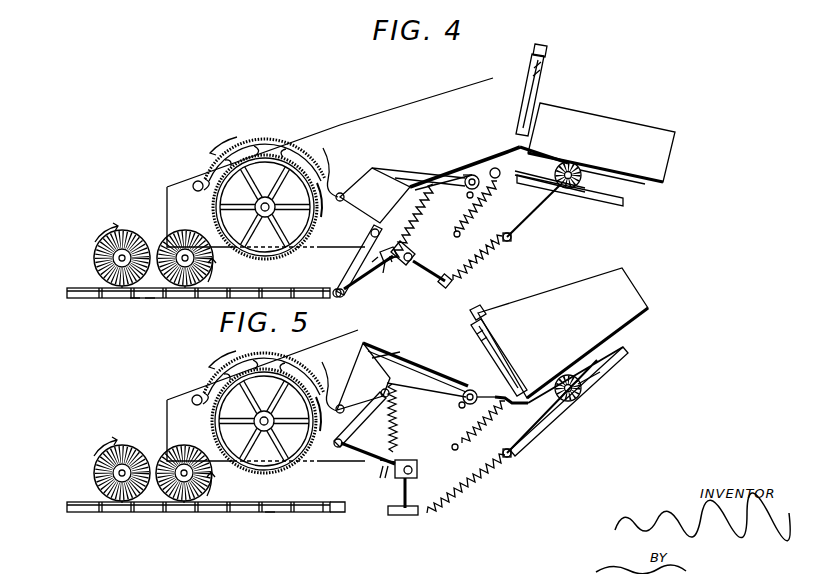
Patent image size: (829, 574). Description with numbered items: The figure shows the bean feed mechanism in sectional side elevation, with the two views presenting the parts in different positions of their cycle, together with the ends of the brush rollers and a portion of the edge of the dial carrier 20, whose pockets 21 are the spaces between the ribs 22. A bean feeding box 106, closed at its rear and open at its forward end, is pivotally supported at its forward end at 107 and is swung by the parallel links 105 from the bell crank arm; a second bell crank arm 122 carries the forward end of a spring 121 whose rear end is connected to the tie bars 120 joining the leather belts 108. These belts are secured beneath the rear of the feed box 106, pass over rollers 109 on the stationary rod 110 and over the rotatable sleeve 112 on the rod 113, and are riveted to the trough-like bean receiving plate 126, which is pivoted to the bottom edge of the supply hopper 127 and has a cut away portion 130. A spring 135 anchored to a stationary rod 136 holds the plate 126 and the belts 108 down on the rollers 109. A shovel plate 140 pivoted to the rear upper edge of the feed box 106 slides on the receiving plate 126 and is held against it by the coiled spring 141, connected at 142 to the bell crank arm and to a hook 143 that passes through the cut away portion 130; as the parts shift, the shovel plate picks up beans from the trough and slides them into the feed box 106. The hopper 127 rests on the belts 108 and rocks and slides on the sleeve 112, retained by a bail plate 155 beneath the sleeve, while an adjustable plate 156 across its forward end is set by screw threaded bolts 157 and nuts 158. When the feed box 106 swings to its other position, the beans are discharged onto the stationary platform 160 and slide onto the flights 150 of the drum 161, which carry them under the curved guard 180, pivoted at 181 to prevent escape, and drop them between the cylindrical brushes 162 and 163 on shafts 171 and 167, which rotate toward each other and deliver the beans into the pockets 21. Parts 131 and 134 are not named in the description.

In FIG. 4, the dial carrier 20 is at (200, 300).
In FIG. 5, the dial carrier 20 is at (235, 514).
In FIG. 4, the pockets 21 is at (135, 300).
In FIG. 4, the ribs 22 is at (150, 300).
In FIG. 5, the ribs 22 is at (270, 514).
In FIG. 4, the parallel links 105 is at (358, 243).
In FIG. 5, the parallel links 105 is at (363, 425).
In FIG. 4, the bean feeding box 106 is at (373, 195).
In FIG. 5, the bean feeding box 106 is at (363, 378).
In FIG. 4, the pivot support 107 is at (378, 178).
In FIG. 5, the pivot support 107 is at (366, 343).
In FIG. 4, the leather belts 108 is at (517, 178).
In FIG. 5, the leather belts 108 is at (525, 405).
In FIG. 4, the rollers 109 is at (468, 198).
In FIG. 5, the rollers 109 is at (460, 407).
In FIG. 4, the stationary rod 110 is at (478, 174).
In FIG. 5, the stationary rod 110 is at (463, 397).
In FIG. 4, the rotatable sleeve 112 is at (592, 168).
In FIG. 5, the rotatable sleeve 112 is at (584, 388).
In FIG. 4, the rod 113 is at (570, 162).
In FIG. 5, the rod 113 is at (576, 397).
In FIG. 4, the tie bars 120 is at (511, 237).
In FIG. 5, the tie bars 120 is at (512, 453).
In FIG. 4, the spring 121 is at (482, 264).
In FIG. 5, the spring 121 is at (480, 485).
In FIG. 4, the bell crank arm 122 is at (418, 278).
In FIG. 5, the bell crank arm 122 is at (400, 490).
In FIG. 4, the bean receiving plate 126 is at (468, 172).
In FIG. 5, the bean receiving plate 126 is at (470, 389).
In FIG. 4, the hopper 127 is at (613, 120).
In FIG. 5, the hopper 127 is at (632, 290).
In FIG. 4, the cut away portion 130 is at (413, 178).
In FIG. 5, the cut away portion 130 is at (445, 374).
In FIG. 4, the roller 131 is at (497, 168).
In FIG. 4, the link bar 134 is at (545, 196).
In FIG. 5, the link bar 134 is at (506, 397).
In FIG. 4, the spring 135 is at (481, 206).
In FIG. 5, the spring 135 is at (474, 438).
In FIG. 4, the stationary rod 136 is at (455, 238).
In FIG. 5, the stationary rod 136 is at (452, 449).
In FIG. 4, the shovel plate 140 is at (437, 166).
In FIG. 5, the shovel plate 140 is at (432, 342).
In FIG. 4, the coiled spring 141 is at (420, 222).
In FIG. 5, the coiled spring 141 is at (397, 415).
In FIG. 4, the spring connection 142 is at (370, 290).
In FIG. 5, the spring connection 142 is at (406, 458).
In FIG. 4, the hook 143 is at (455, 173).
In FIG. 5, the hook 143 is at (400, 356).
In FIG. 4, the flights 150 is at (302, 160).
In FIG. 5, the flights 150 is at (303, 376).
In FIG. 4, the bail plate 155 is at (600, 206).
In FIG. 5, the bail plate 155 is at (632, 347).
In FIG. 4, the adjustable plate 156 is at (540, 98).
In FIG. 5, the adjustable plate 156 is at (505, 348).
In FIG. 4, the screw threaded bolts 157 is at (546, 50).
In FIG. 5, the screw threaded bolts 157 is at (484, 318).
In FIG. 4, the nuts 158 is at (546, 67).
In FIG. 5, the nuts 158 is at (490, 326).
In FIG. 4, the stationary platform 160 is at (323, 165).
In FIG. 5, the stationary platform 160 is at (330, 460).
In FIG. 4, the drum 161 is at (290, 142).
In FIG. 5, the drum 161 is at (253, 412).
In FIG. 4, the cylindrical brush 162 is at (192, 232).
In FIG. 5, the cylindrical brush 162 is at (188, 446).
In FIG. 4, the cylindrical brush 163 is at (122, 230).
In FIG. 5, the cylindrical brush 163 is at (118, 445).
In FIG. 4, the brush shaft 167 is at (120, 288).
In FIG. 5, the brush shaft 167 is at (122, 504).
In FIG. 4, the brush shaft 171 is at (180, 292).
In FIG. 5, the brush shaft 171 is at (188, 506).
In FIG. 4, the curved guard 180 is at (266, 140).
In FIG. 5, the curved guard 180 is at (264, 355).
In FIG. 4, the guard pivot 181 is at (194, 181).
In FIG. 5, the guard pivot 181 is at (193, 397).